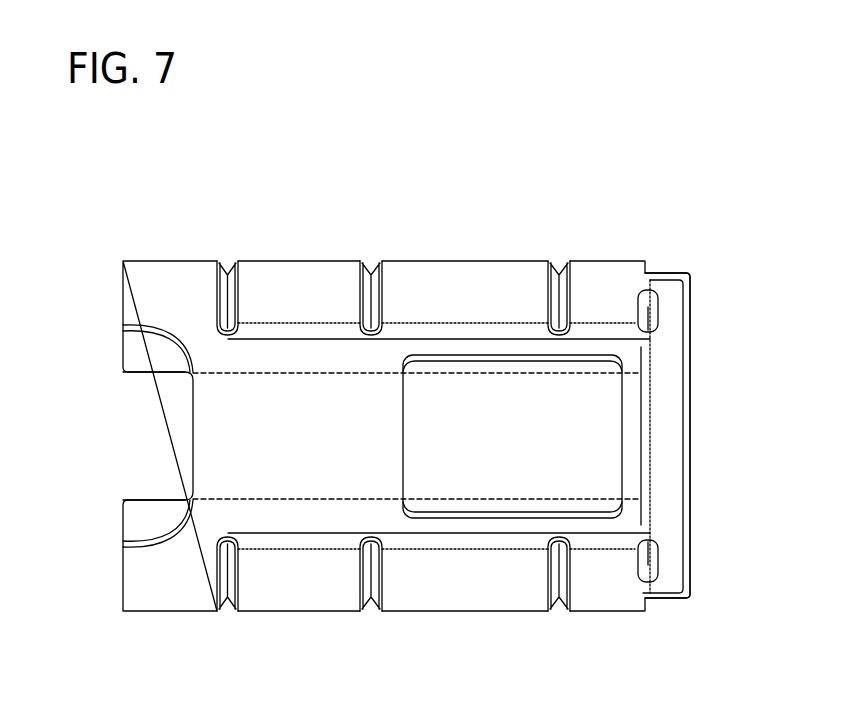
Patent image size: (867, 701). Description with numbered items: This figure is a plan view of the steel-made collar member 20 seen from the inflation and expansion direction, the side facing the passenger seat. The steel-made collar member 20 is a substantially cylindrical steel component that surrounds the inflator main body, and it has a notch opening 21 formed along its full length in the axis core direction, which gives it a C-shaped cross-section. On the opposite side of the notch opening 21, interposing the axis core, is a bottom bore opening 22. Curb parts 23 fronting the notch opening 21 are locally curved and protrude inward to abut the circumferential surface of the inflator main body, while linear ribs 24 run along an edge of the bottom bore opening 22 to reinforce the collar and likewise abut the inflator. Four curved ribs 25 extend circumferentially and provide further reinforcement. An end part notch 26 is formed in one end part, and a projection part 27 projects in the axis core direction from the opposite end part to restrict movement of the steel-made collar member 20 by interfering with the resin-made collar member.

The steel-made collar member 20 is at (401, 371).
The notch opening 21 is at (150, 442).
The bottom bore opening 22 is at (407, 468).
The curb parts 23 is at (143, 374).
The linear ribs 24 is at (600, 337).
The curved ribs 25 is at (230, 272).
The end part notch 26 is at (150, 335).
The projection part 27 is at (676, 493).